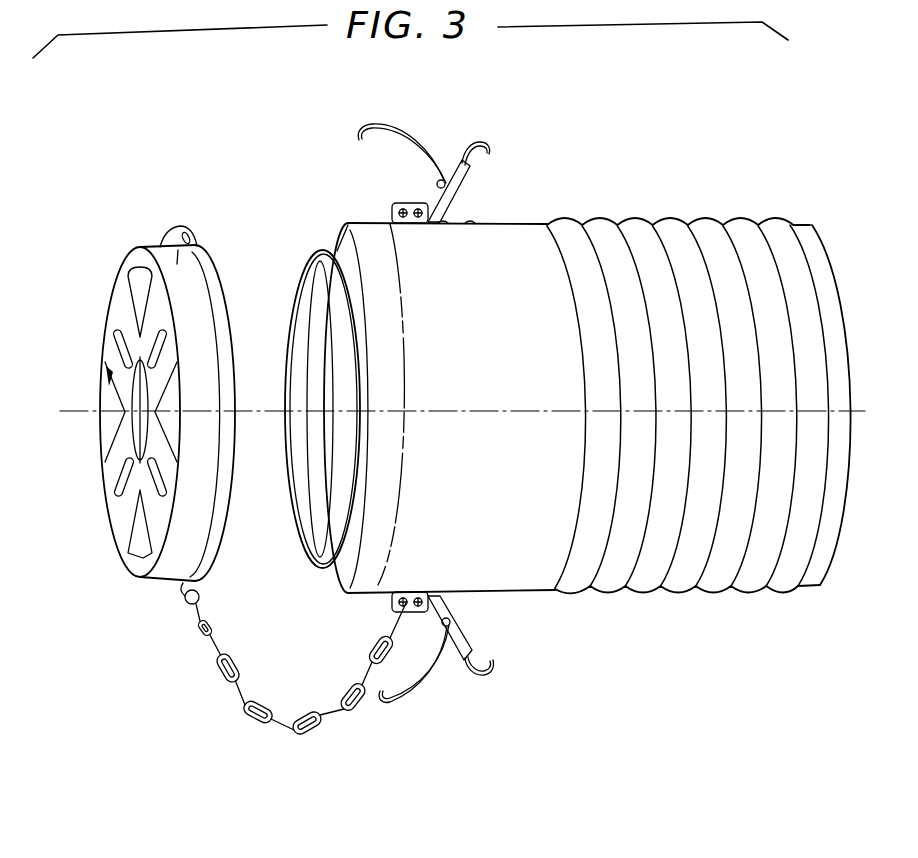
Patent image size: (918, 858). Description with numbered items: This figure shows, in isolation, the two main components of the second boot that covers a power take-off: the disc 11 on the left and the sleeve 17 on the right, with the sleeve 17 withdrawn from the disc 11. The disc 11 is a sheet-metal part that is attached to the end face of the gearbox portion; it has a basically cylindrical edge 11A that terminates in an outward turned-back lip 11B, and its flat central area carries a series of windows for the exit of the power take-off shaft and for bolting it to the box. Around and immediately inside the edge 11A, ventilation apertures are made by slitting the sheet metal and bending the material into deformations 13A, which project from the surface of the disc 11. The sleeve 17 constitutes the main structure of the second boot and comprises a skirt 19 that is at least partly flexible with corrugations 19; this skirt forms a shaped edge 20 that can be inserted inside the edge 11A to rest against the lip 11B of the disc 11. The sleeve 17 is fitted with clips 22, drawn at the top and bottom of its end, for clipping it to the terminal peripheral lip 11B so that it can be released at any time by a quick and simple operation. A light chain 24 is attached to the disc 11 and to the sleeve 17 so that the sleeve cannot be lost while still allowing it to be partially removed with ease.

The disc 11 is at (107, 545).
The cylindrical edge 11A is at (184, 243).
The lip 11B is at (226, 555).
The deformations 13A is at (138, 284).
The sleeve 17 is at (568, 605).
The skirt with corrugations 19 is at (746, 576).
The shaped edge 20 is at (310, 250).
The clips 22 is at (446, 148).
The light chain 24 is at (243, 708).